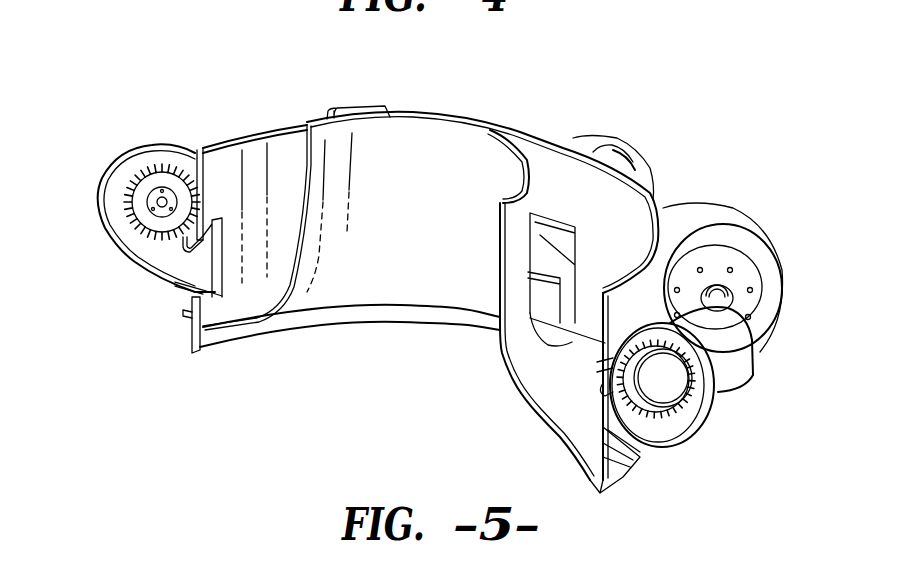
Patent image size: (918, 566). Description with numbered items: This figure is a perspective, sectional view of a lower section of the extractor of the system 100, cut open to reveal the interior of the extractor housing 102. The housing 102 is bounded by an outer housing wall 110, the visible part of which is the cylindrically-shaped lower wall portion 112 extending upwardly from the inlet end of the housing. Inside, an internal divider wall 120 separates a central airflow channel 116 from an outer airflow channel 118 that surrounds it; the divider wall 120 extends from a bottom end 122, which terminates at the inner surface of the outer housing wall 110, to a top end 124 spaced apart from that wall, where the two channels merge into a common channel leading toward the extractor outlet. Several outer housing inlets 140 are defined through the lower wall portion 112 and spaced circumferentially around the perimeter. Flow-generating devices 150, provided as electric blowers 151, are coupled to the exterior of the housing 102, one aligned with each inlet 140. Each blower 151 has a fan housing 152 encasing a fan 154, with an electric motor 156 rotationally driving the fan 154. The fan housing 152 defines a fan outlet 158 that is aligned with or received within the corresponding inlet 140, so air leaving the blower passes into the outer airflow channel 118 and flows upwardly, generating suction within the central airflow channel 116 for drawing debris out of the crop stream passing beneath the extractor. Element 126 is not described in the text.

The system 100 is at (178, 50).
The extractor housing 102 is at (294, 127).
The outer housing wall 110 is at (477, 283).
The lower wall portion 112 is at (660, 217).
The central airflow channel 116 is at (431, 254).
The outer airflow channel 118 is at (287, 254).
The internal divider wall 120 is at (313, 300).
The bottom end 122 is at (213, 343).
The top end 124 is at (515, 165).
The blower shell 126 is at (597, 187).
The outer housing inlet 140 is at (203, 240).
The flow-generating device 150 is at (101, 161).
The electric blower 151 is at (431, 333).
The fan housing 152 is at (123, 267).
The fan 154 is at (148, 220).
The electric motor 156 is at (702, 210).
The fan outlet 158 is at (183, 283).